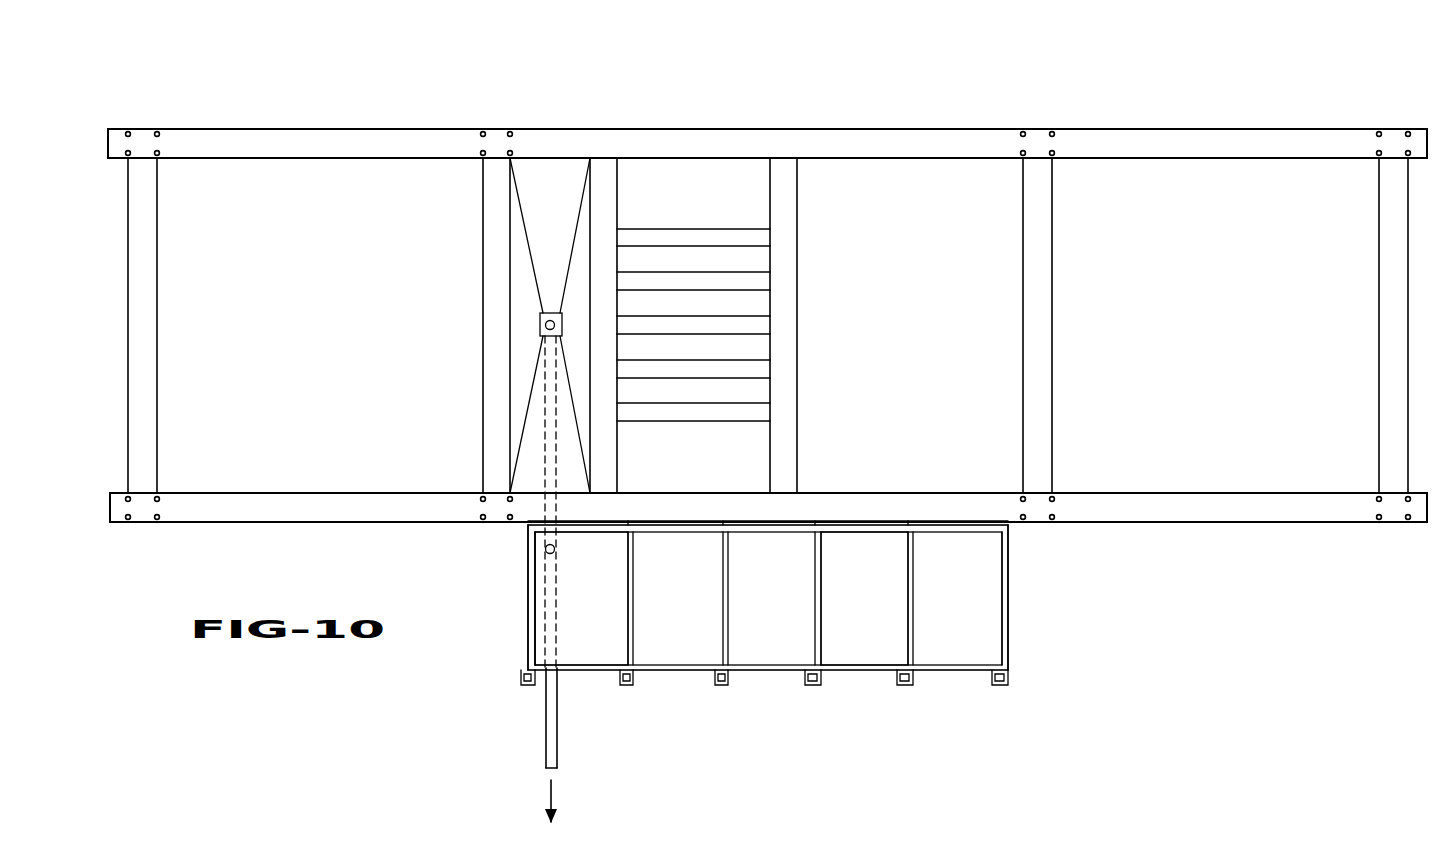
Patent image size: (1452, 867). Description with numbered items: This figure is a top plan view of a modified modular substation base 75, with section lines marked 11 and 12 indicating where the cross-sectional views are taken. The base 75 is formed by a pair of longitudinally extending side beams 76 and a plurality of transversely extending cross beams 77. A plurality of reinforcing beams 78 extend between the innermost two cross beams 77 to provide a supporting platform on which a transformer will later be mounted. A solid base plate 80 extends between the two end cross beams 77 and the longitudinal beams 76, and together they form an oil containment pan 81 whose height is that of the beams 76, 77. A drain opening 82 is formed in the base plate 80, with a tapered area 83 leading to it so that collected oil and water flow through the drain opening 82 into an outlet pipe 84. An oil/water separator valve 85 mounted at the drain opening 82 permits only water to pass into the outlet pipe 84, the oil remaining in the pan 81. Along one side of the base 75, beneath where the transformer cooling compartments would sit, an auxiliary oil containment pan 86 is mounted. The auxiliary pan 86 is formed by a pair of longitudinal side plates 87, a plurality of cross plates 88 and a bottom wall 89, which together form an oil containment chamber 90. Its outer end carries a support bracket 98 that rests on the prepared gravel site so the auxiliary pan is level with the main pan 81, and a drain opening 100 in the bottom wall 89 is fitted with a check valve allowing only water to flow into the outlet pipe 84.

The base 75 is at (928, 104).
The side beams 76 is at (314, 136).
The cross beams 77 is at (147, 284).
The reinforcing beams 78 is at (766, 237).
The base plate 80 is at (1224, 371).
The oil containment pan 81 is at (1172, 452).
The drain opening 82 is at (556, 313).
The tapered area 83 is at (553, 185).
The outlet pipe 84 is at (546, 752).
The oil/water separator valve 85 is at (547, 325).
The auxiliary oil containment pan 86 is at (933, 682).
The side plates 87 is at (770, 533).
The cross plates 88 is at (537, 593).
The bottom wall 89 is at (857, 633).
The oil containment chamber 90 is at (610, 632).
The support bracket 98 is at (526, 688).
The drain opening 100 is at (546, 549).
The section line for FIG. 11 is at (568, 232).
The section line for FIG. 12 is at (653, 497).